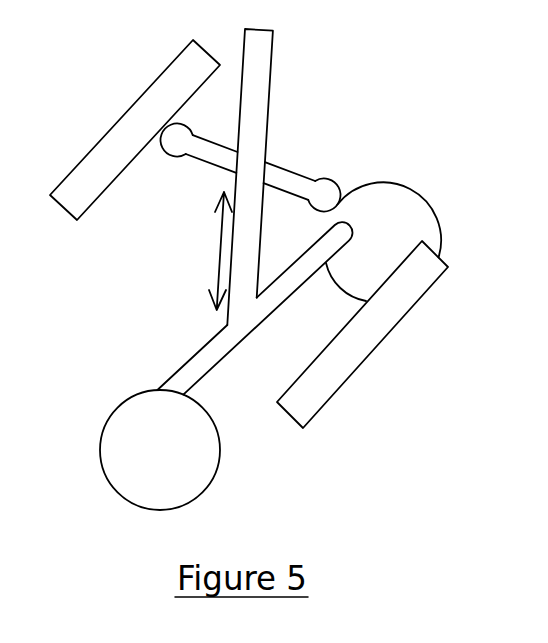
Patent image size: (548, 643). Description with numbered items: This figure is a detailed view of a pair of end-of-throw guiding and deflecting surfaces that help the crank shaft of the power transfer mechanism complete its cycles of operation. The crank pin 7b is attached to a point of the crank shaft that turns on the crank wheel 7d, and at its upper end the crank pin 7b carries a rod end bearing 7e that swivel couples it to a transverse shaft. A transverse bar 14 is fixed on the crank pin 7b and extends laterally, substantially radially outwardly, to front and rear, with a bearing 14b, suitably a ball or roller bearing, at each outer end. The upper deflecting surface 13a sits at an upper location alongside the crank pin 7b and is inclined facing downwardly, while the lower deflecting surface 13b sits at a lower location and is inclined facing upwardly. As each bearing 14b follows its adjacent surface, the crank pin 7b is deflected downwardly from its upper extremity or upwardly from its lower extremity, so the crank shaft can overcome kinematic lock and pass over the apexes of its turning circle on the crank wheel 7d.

The crank pin 7b is at (260, 127).
The crank wheel 7d is at (158, 388).
The rod end bearing 7e is at (213, 484).
The upper deflecting surface 13a is at (107, 187).
The lower deflecting surface 13b is at (300, 374).
The transverse bar 14 is at (205, 163).
The bearing 14b is at (176, 143).